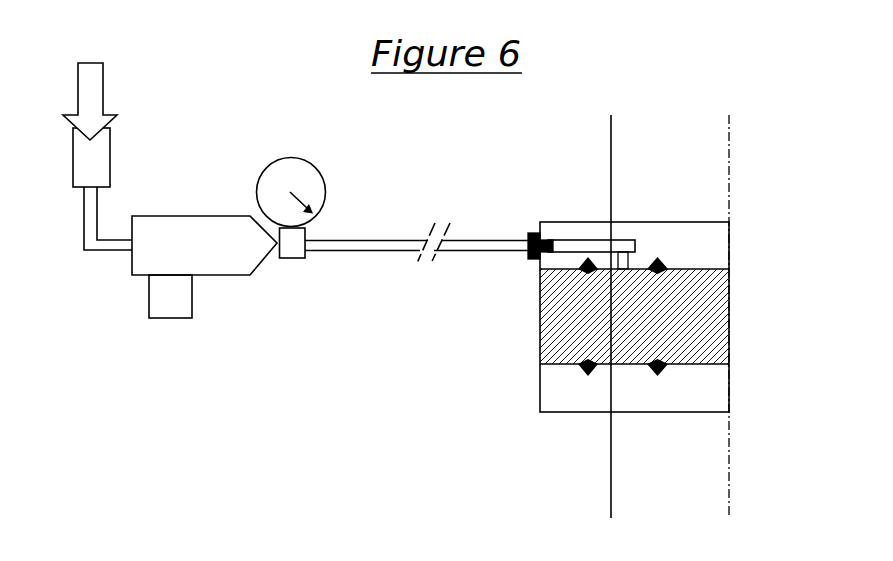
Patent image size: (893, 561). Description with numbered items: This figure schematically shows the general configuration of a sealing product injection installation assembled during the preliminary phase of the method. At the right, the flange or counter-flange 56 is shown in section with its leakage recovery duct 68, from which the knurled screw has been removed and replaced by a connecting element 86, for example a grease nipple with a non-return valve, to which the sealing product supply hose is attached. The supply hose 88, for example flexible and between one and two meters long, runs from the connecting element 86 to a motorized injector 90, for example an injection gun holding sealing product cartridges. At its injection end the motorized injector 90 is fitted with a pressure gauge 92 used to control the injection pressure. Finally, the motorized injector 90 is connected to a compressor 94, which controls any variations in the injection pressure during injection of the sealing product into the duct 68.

The flange or counter-flange 56 is at (660, 226).
The leakage recovery duct 68 is at (587, 236).
The connecting element 86 is at (536, 231).
The supply hose 88 is at (493, 253).
The motorized injector 90 is at (204, 267).
The pressure gauge 92 is at (291, 170).
The compressor 94 is at (95, 158).